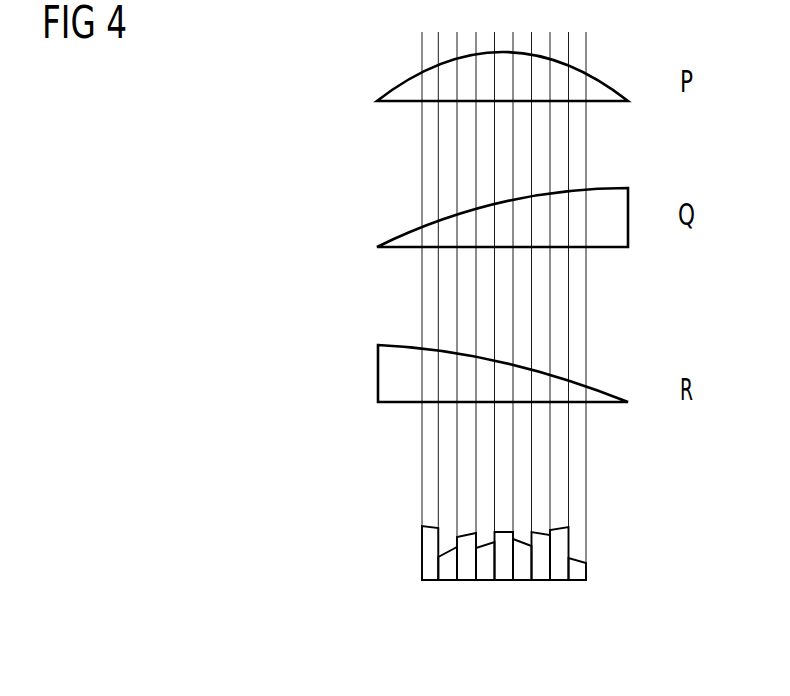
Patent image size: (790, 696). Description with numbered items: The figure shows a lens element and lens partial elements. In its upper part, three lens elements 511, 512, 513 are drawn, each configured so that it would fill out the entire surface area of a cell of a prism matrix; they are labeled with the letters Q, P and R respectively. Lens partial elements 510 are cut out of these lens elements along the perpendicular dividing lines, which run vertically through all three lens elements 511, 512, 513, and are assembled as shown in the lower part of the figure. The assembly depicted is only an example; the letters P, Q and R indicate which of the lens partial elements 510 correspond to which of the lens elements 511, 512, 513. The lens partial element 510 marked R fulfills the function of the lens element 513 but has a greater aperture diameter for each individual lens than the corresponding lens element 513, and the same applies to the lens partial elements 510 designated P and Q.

The lens partial elements 510 is at (388, 518).
The lens element 511 is at (428, 233).
The lens element 512 is at (418, 85).
The lens element 513 is at (395, 377).